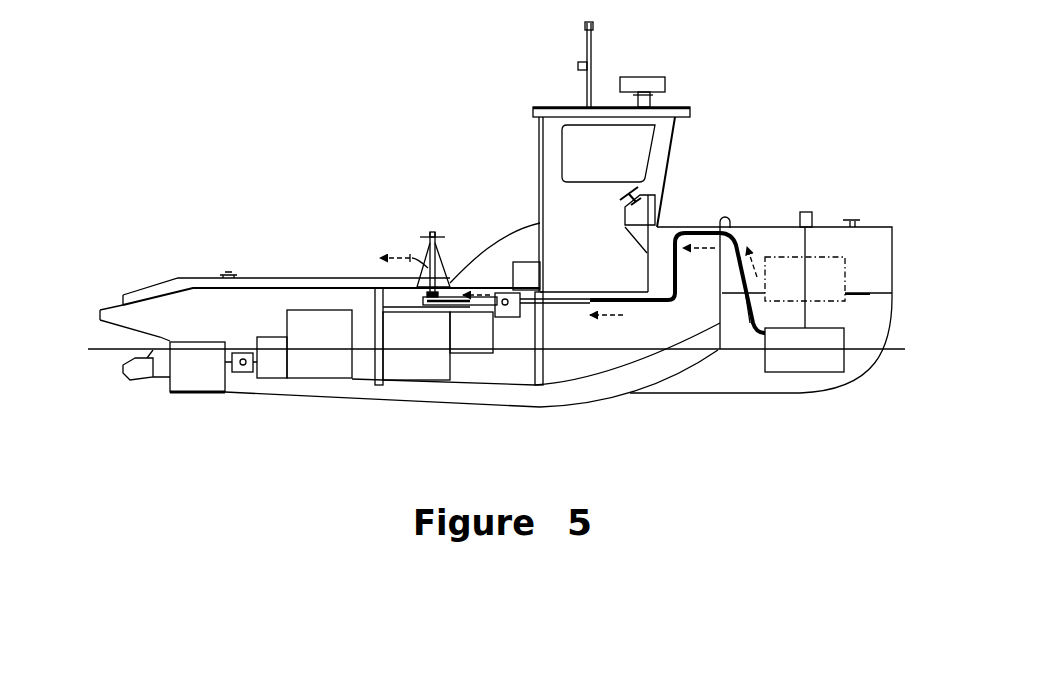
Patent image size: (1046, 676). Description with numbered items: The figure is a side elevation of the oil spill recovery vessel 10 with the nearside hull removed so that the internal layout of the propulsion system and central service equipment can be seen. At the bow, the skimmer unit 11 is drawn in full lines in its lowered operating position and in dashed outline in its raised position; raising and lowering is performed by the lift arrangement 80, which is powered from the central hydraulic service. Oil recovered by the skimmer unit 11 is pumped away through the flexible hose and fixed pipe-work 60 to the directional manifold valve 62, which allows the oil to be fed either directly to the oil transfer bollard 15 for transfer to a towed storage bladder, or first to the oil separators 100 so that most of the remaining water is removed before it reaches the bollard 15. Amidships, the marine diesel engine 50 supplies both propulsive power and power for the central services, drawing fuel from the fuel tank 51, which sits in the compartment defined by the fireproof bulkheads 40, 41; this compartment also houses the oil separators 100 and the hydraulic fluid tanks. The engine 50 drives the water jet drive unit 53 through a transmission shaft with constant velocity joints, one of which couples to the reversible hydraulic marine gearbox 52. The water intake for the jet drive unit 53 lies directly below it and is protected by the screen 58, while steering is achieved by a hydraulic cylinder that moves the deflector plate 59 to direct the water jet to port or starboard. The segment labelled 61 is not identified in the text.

The oil spill recovery vessel 10 is at (262, 185).
The skimmer unit 11 is at (791, 281).
The oil transfer bollard 15 is at (418, 235).
The fireproof bulkhead 40 is at (377, 367).
The fireproof bulkhead 41 is at (540, 367).
The marine diesel engine 50 is at (330, 341).
The fuel tank 51 is at (427, 343).
The reversible hydraulic marine gearbox 52 is at (284, 371).
The water jet drive unit 53 is at (209, 379).
The screen 58 is at (193, 396).
The deflector plate 59 is at (137, 372).
The flexible hose and fixed pipe-work 60 is at (738, 265).
The hose horizontal section 61 is at (665, 294).
The directional manifold valve 62 is at (507, 318).
The lift arrangement 80 is at (812, 212).
The oil separator 100 is at (489, 343).